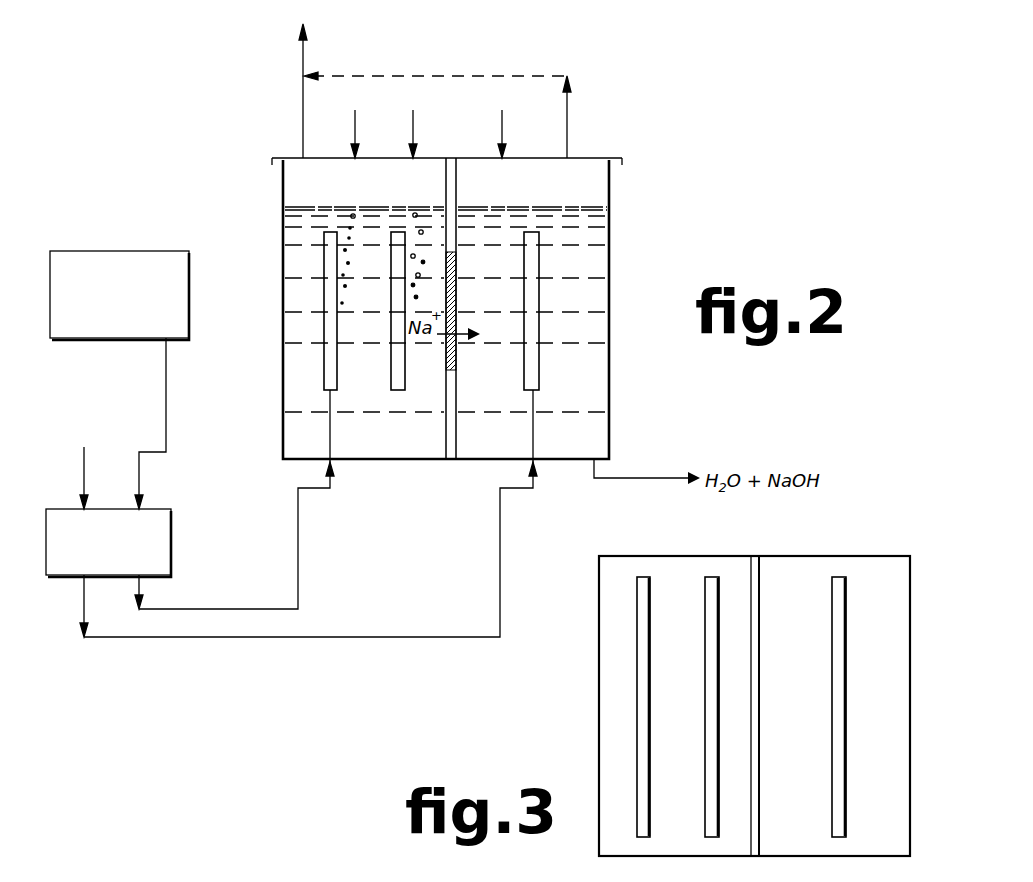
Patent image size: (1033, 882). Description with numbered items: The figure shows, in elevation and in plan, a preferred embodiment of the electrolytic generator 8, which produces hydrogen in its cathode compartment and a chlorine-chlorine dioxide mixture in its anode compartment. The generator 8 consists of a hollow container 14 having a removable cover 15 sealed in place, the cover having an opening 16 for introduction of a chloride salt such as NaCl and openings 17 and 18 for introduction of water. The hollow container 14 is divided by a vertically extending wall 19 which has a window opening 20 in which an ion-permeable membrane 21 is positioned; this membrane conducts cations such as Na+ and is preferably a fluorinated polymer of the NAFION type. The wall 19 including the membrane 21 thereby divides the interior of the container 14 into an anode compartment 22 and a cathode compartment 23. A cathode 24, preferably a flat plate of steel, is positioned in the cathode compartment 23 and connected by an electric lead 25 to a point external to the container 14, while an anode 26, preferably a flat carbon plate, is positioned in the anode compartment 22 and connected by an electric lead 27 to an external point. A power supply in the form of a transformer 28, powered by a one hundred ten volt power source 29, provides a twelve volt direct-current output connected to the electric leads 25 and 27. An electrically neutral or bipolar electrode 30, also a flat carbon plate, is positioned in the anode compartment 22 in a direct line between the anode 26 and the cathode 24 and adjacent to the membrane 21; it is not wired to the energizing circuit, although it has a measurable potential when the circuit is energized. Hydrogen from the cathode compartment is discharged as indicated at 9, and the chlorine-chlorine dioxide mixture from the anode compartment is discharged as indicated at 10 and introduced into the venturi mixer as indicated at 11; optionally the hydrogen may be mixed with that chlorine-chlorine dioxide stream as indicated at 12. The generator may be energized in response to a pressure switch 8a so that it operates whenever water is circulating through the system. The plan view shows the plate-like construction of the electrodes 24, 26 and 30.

In FIG. 2, the electrolytic generator 8 is at (612, 378).
In FIG. 3, the electrolytic generator 8 is at (596, 812).
In FIG. 2, the pressure switch 8a is at (120, 251).
In FIG. 2, the hydrogen discharge 9 is at (567, 114).
In FIG. 2, the chlorine-chlorine dioxide discharge 10 is at (303, 92).
In FIG. 2, the chlorine-chlorine dioxide introduction 11 is at (300, 28).
In FIG. 2, the hydrogen mixing line 12 is at (437, 76).
In FIG. 2, the hollow container 14 is at (283, 408).
In FIG. 2, the removable cover 15 is at (290, 158).
In FIG. 2, the opening for chloride salt 16 is at (354, 162).
In FIG. 2, the water opening 17 is at (413, 160).
In FIG. 2, the water opening 18 is at (502, 160).
In FIG. 2, the vertically extending wall 19 is at (462, 390).
In FIG. 3, the vertically extending wall 19 is at (764, 760).
In FIG. 2, the window opening 20 is at (456, 252).
In FIG. 2, the ion-permeable membrane 21 is at (457, 314).
In FIG. 2, the anode compartment 22 is at (300, 263).
In FIG. 2, the cathode compartment 23 is at (588, 310).
In FIG. 2, the cathode 24 is at (538, 352).
In FIG. 3, the cathode 24 is at (834, 745).
In FIG. 2, the electric lead 25 is at (533, 424).
In FIG. 2, the anode 26 is at (324, 322).
In FIG. 3, the anode 26 is at (640, 740).
In FIG. 2, the electric lead 27 is at (330, 424).
In FIG. 2, the transformer 28 is at (171, 550).
In FIG. 2, the 110 volt power source 29 is at (84, 484).
In FIG. 2, the electrically neutral electrode 30 is at (397, 322).
In FIG. 3, the electrically neutral electrode 30 is at (708, 747).